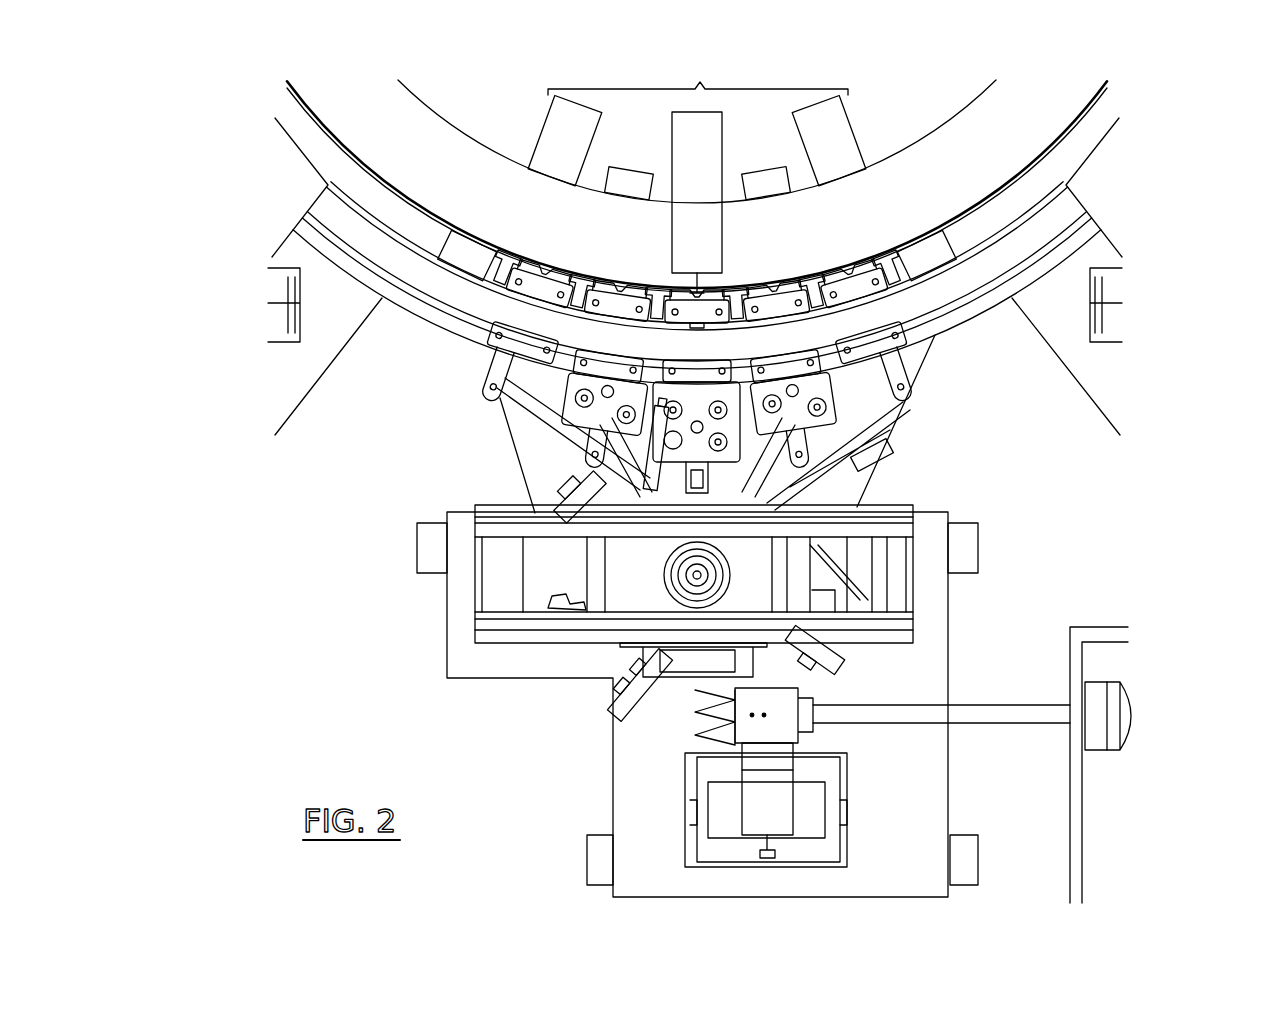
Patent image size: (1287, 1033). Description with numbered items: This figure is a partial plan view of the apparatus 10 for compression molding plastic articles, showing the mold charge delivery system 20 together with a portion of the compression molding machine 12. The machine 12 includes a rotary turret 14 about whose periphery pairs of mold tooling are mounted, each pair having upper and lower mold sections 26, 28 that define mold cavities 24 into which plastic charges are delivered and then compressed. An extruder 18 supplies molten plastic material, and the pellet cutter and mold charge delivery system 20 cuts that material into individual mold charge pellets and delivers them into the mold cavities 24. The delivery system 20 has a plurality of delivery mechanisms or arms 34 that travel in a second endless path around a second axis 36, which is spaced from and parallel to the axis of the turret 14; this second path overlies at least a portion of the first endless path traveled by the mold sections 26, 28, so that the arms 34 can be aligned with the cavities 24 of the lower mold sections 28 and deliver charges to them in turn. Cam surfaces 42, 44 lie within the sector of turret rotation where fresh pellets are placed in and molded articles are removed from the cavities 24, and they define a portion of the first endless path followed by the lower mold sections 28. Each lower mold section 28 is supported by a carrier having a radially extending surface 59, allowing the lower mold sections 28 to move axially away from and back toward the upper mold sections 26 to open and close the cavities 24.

The apparatus 10 is at (1196, 390).
The compression molding machine 12 is at (1172, 214).
The rotary turret 14 is at (274, 216).
The extruder 18 is at (1118, 669).
The pellet cutter and mold charge delivery system 20 is at (955, 498).
The mold cavities 24 is at (736, 408).
The upper mold sections 26 is at (938, 344).
The lower mold sections 28 is at (573, 437).
The delivery mechanisms or arms 34 is at (872, 458).
The second axis 36 is at (688, 582).
The cam surface 42 is at (523, 410).
The cam surface 44 is at (900, 437).
The radially extending surface 59 is at (590, 143).